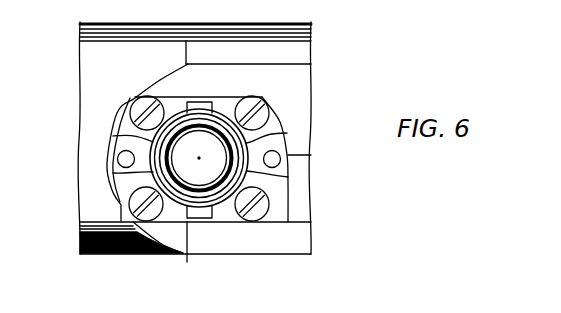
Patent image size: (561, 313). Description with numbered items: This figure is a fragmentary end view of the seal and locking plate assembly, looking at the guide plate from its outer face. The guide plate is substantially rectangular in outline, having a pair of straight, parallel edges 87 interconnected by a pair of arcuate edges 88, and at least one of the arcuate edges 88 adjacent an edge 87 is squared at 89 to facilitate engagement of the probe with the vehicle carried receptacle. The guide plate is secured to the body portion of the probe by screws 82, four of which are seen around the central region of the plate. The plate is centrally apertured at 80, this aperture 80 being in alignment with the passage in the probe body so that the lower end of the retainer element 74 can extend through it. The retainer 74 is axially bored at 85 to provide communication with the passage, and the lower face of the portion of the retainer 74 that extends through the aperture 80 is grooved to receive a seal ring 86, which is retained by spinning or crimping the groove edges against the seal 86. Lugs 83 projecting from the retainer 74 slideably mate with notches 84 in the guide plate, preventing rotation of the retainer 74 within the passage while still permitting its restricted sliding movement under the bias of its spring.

The retainer element 74 is at (167, 155).
The aperture 80 is at (288, 128).
The screws 82 is at (142, 100).
The lugs 83 is at (200, 110).
The notches 84 is at (190, 96).
The axial bore 85 is at (228, 160).
The seal ring 86 is at (155, 170).
The straight parallel edges 87 is at (242, 97).
The arcuate edges 88 is at (82, 107).
The squared portion 89 is at (82, 222).